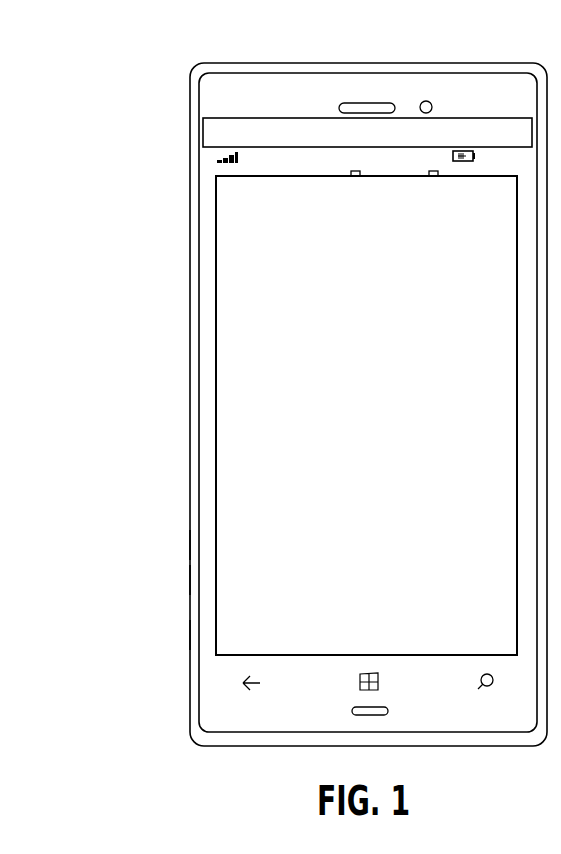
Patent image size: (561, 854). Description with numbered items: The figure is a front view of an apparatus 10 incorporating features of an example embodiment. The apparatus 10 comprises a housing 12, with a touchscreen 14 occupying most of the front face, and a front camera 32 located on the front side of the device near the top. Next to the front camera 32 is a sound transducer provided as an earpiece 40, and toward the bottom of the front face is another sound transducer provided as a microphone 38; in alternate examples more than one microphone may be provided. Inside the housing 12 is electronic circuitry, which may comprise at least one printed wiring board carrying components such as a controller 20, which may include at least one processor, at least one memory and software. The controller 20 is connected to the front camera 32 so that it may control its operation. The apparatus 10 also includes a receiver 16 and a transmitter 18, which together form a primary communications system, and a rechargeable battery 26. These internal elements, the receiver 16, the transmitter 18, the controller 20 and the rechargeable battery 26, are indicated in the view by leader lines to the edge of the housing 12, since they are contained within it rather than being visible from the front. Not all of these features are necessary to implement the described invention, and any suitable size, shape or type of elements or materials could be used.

The apparatus 10 is at (315, 404).
The housing 12 is at (188, 345).
The touchscreen 14 is at (250, 465).
The receiver 16 is at (188, 511).
The transmitter 18 is at (188, 545).
The controller 20 is at (188, 577).
The rechargeable battery 26 is at (188, 633).
The front camera 32 is at (431, 103).
The microphone 38 is at (377, 715).
The earpiece 40 is at (360, 103).